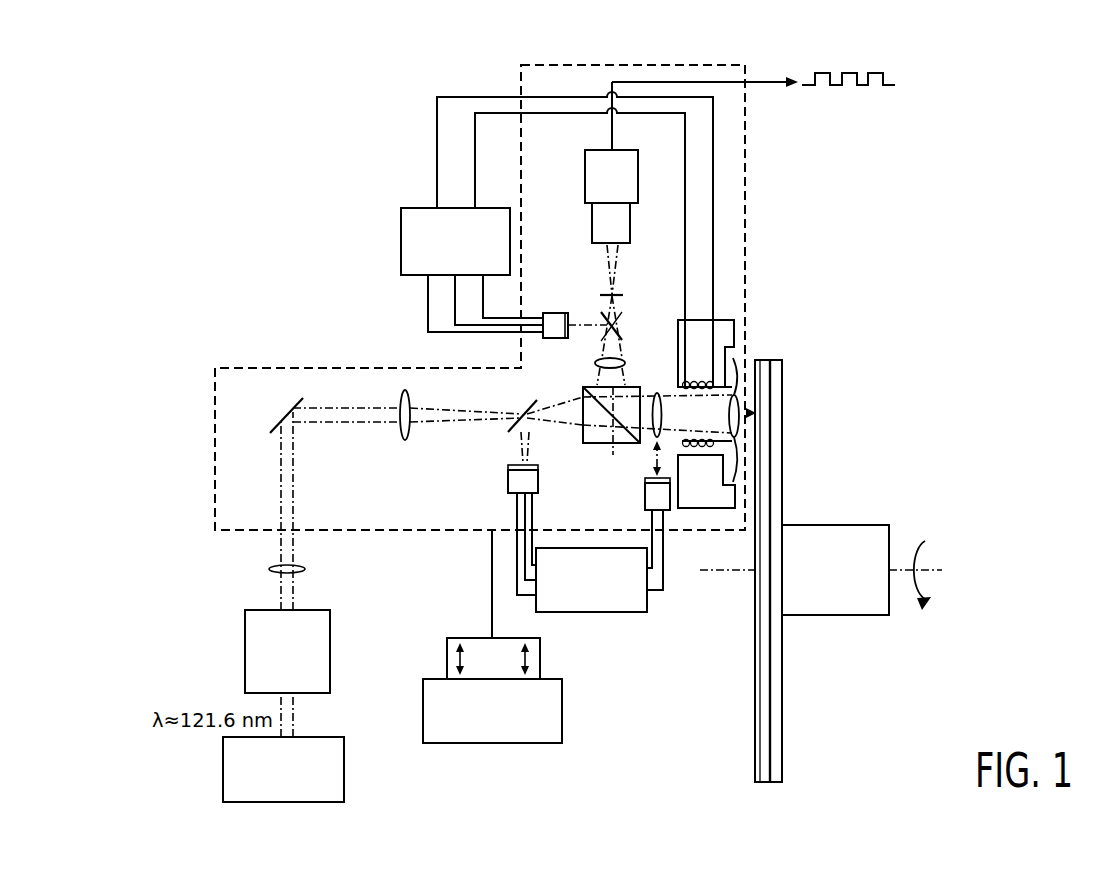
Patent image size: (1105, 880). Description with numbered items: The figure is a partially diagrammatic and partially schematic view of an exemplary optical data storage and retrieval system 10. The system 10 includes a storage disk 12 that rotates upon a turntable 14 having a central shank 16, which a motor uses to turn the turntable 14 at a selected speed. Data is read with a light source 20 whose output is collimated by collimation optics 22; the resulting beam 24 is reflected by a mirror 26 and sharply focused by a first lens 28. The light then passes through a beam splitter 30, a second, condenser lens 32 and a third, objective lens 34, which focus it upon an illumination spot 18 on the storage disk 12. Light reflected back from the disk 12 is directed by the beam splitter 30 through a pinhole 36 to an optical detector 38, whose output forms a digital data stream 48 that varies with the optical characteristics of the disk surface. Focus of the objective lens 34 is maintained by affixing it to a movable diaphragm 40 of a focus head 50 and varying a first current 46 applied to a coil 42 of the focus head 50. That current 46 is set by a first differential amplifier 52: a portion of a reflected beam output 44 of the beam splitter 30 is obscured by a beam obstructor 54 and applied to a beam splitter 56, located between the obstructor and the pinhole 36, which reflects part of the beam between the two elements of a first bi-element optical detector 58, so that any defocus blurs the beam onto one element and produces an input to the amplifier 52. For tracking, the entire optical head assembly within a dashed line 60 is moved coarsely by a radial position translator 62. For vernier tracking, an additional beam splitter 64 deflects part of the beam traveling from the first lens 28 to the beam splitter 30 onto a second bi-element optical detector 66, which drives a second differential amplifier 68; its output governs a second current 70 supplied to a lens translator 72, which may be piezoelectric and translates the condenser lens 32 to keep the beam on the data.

The optical data storage and retrieval system 10 is at (688, 694).
The storage disk 12 is at (760, 352).
The turntable 14 is at (782, 405).
The central shank 16 is at (838, 525).
The illumination spot 18 is at (750, 405).
The light source 20 is at (223, 772).
The collimation optics 22 is at (245, 649).
The beam 24 is at (269, 569).
The mirror 26 is at (286, 416).
The first lens 28 is at (410, 434).
The beam splitter 30 is at (613, 446).
The condenser lens 32 is at (662, 416).
The objective lens 34 is at (736, 435).
The pinhole 36 is at (617, 293).
The optical detector 38 is at (585, 185).
The movable diaphragm 40 is at (682, 386).
The coil 42 is at (680, 444).
The reflected beam output 44 is at (595, 363).
The first current 46 is at (458, 96).
The digital data stream 48 is at (832, 86).
The focus head 50 is at (702, 319).
The first differential amplifier 52 is at (401, 222).
The beam obstructor 54 is at (617, 338).
The beam splitter 56 is at (618, 313).
The first bi-element optical detector 58 is at (557, 313).
The dashed line 60 is at (382, 532).
The radial position translator 62 is at (483, 743).
The additional beam splitter 64 is at (522, 412).
The second bi-element optical detector 66 is at (508, 483).
The second differential amplifier 68 is at (583, 613).
The second current 70 is at (657, 592).
The lens translator 72 is at (645, 494).